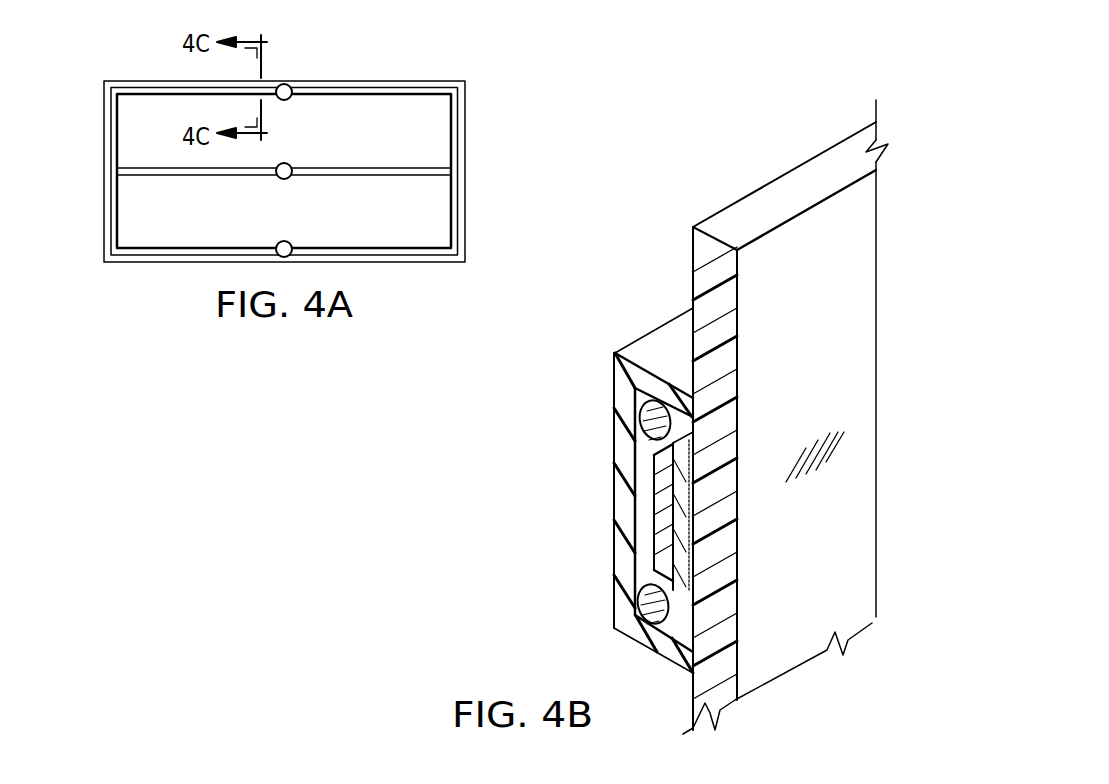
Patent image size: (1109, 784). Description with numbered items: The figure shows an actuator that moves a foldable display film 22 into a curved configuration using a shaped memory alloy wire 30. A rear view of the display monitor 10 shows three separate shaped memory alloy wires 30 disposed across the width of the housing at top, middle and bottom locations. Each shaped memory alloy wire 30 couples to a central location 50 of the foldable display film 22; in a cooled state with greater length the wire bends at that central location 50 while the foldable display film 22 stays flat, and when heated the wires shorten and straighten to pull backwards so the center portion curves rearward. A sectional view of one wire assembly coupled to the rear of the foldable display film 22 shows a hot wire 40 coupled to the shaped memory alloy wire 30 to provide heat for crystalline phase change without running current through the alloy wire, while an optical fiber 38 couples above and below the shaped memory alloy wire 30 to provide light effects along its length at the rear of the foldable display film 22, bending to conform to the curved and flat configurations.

In FIG. 4A, the display monitor 10 is at (73, 109).
In FIG. 4B, the foldable display film 22 is at (876, 364).
In FIG. 4A, the shaped memory alloy wire 30 is at (405, 199).
In FIG. 4B, the shaped memory alloy wire 30 is at (682, 553).
In FIG. 4B, the optical fiber 38 is at (640, 419).
In FIG. 4B, the hot wire 40 is at (653, 480).
In FIG. 4A, the central location 50 is at (308, 200).